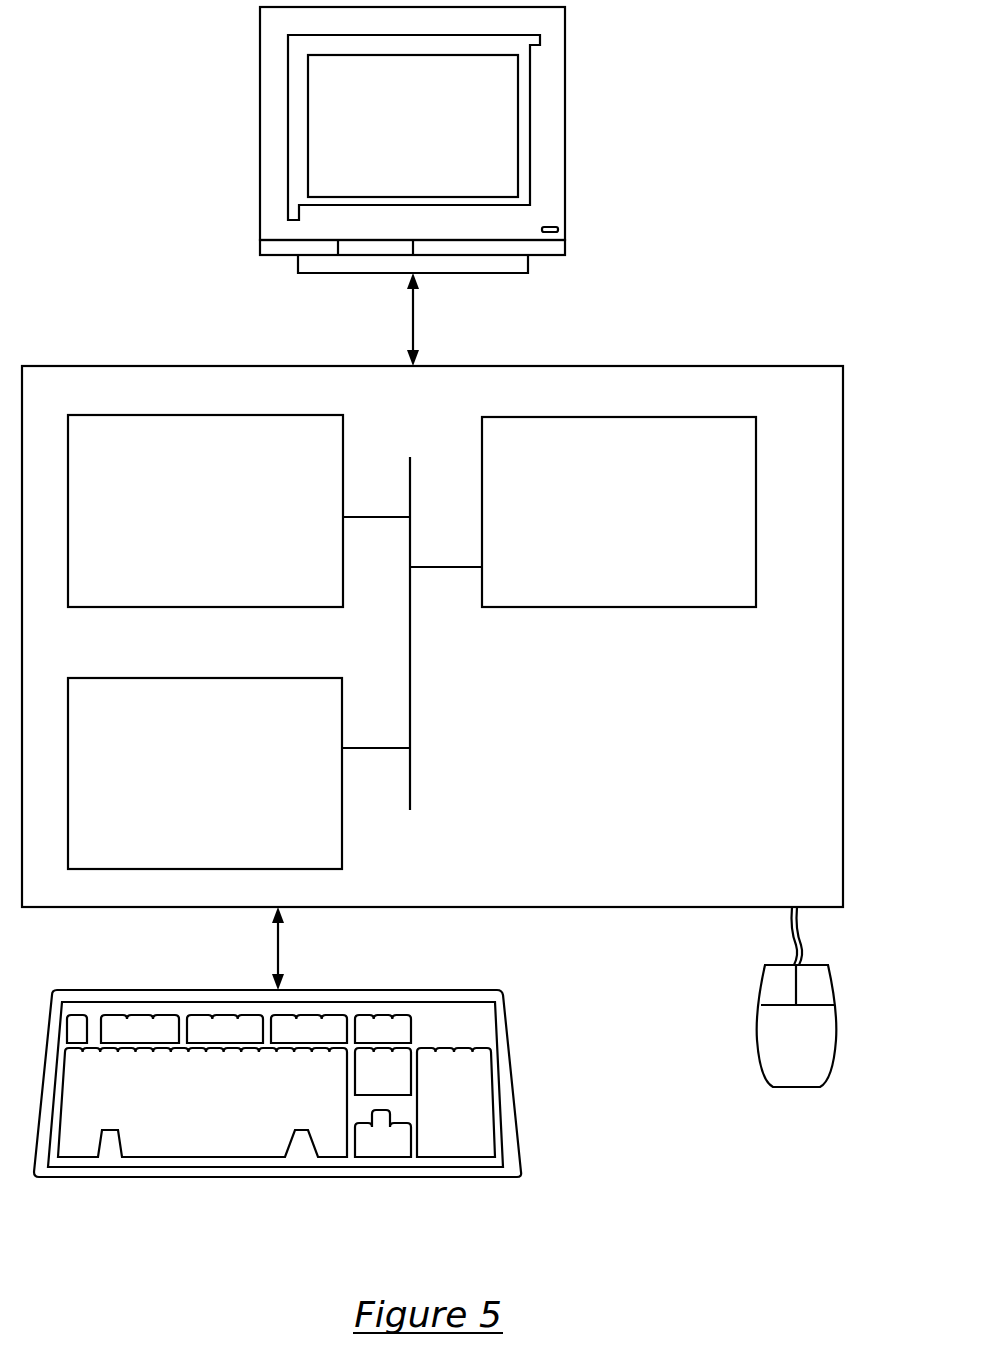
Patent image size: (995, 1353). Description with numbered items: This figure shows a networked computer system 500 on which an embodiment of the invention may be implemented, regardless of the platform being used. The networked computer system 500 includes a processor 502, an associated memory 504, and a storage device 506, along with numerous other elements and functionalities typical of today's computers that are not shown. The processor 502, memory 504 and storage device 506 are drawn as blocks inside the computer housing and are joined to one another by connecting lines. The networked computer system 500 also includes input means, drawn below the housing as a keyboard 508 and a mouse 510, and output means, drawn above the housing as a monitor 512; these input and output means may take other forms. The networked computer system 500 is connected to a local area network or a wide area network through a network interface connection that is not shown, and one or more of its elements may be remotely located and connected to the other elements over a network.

The networked computer system 500 is at (812, 225).
The processor 502 is at (600, 517).
The memory 504 is at (181, 526).
The storage device 506 is at (178, 787).
The keyboard 508 is at (171, 1130).
The mouse 510 is at (773, 1052).
The monitor 512 is at (389, 143).